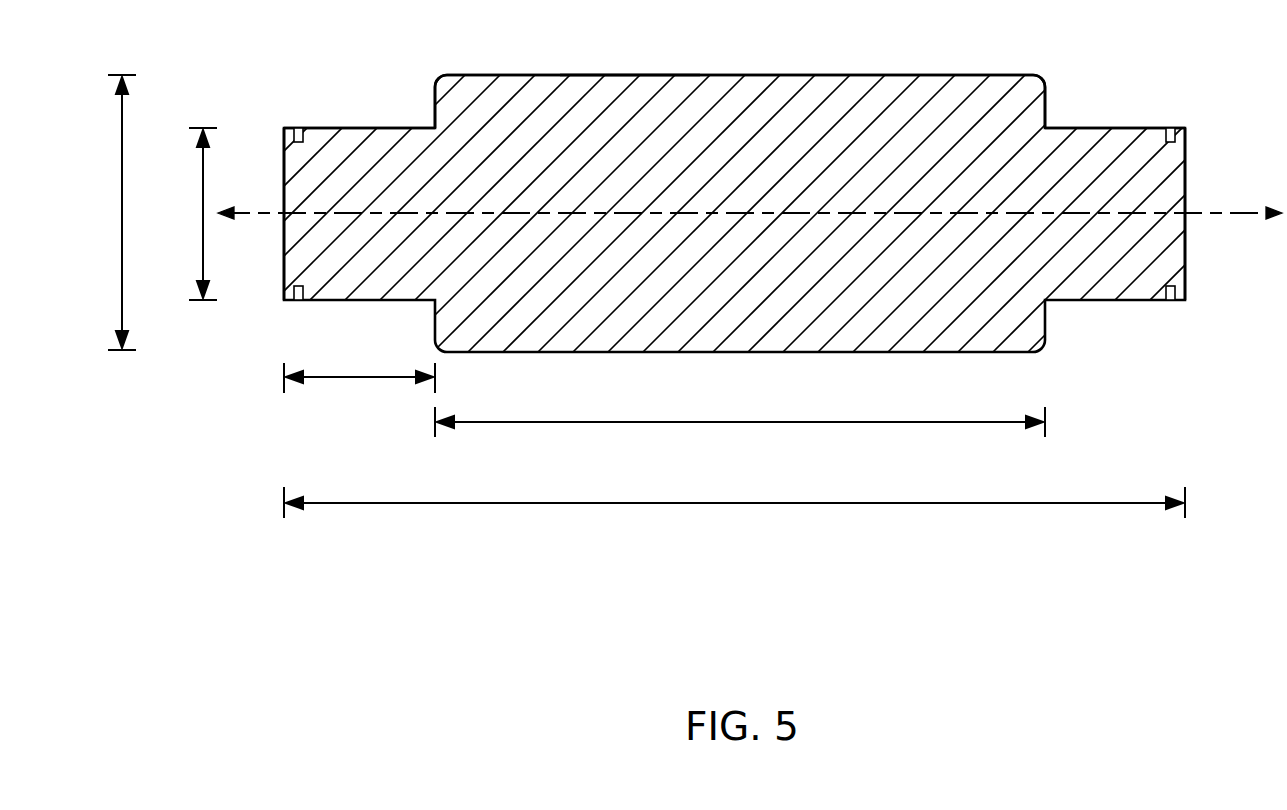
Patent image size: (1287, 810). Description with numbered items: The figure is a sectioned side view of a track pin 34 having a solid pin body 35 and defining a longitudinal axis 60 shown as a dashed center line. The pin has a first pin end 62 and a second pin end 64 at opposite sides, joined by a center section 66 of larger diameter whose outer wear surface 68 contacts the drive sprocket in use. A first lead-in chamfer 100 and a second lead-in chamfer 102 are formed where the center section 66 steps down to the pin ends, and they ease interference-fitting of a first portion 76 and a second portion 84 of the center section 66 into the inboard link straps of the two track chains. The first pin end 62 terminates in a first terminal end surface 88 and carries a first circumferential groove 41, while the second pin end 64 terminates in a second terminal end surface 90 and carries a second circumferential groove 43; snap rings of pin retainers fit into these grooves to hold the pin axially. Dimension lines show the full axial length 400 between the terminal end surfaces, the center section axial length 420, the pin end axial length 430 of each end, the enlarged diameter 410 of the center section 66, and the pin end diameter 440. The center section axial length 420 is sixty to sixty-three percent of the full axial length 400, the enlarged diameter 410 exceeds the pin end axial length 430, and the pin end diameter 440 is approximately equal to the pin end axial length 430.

The track pin 34 is at (602, 80).
The solid pin body 35 is at (602, 80).
The first circumferential groove 41 is at (1171, 127).
The second circumferential groove 43 is at (297, 127).
The longitudinal axis 60 is at (1226, 212).
The first pin end 62 is at (1120, 143).
The second pin end 64 is at (347, 143).
The center section 66 is at (855, 80).
The outer wear surface 68 is at (748, 80).
The first portion 76 is at (948, 80).
The second portion 84 is at (512, 80).
The first terminal end surface 88 is at (1185, 258).
The second terminal end surface 90 is at (284, 258).
The first lead-in chamfer 100 is at (1042, 82).
The second lead-in chamfer 102 is at (440, 80).
The full axial length 400 is at (742, 504).
The enlarged diameter 410 is at (120, 213).
The center section axial length 420 is at (742, 423).
The pin end axial length 430 is at (358, 378).
The pin end diameter 440 is at (201, 213).